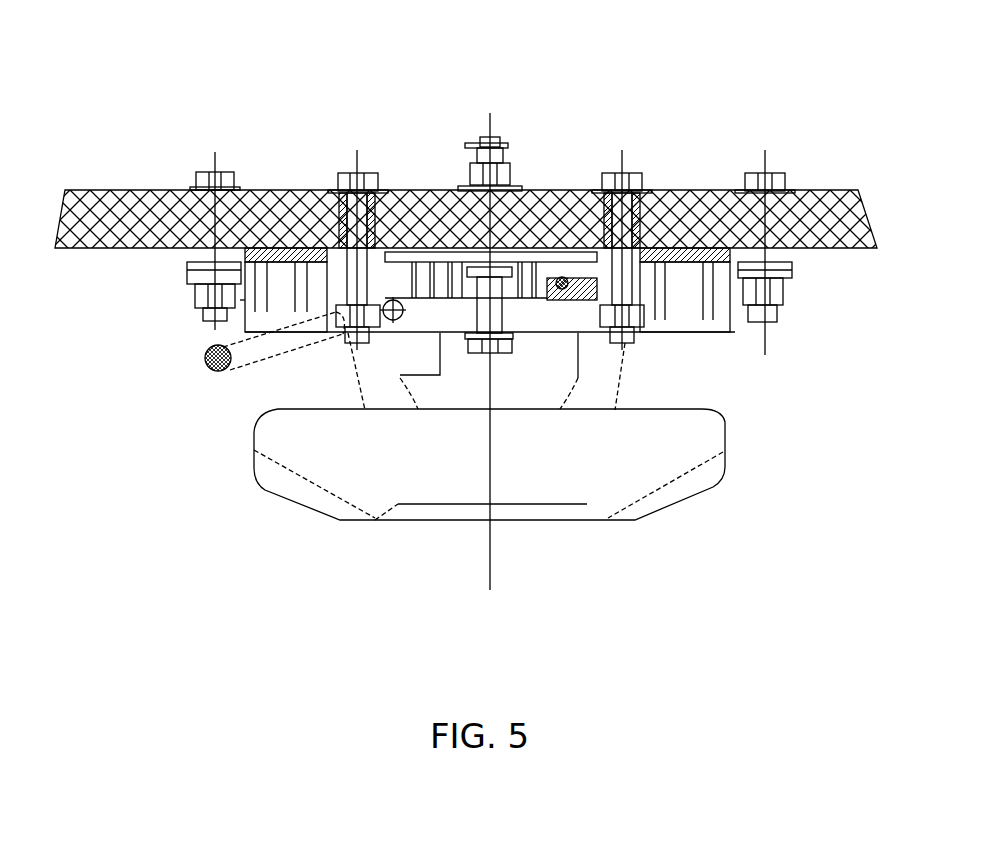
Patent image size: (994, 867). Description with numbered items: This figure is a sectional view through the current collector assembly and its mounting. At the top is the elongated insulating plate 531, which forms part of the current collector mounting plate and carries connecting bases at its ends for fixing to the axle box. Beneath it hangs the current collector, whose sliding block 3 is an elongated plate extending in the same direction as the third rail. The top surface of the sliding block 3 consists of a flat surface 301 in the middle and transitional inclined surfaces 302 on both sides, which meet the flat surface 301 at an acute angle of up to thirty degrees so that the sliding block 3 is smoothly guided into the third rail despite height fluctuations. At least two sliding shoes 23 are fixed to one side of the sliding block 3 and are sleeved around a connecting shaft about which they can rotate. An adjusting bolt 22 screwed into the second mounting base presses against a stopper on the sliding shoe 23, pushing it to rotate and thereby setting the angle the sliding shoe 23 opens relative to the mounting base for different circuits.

The insulating plate 531 is at (466, 136).
The adjusting bolt 22 is at (553, 364).
The sliding shoe 23 is at (570, 367).
The sliding block 3 is at (573, 505).
The flat surface 301 is at (420, 533).
The transitional inclined surface 302 is at (705, 534).